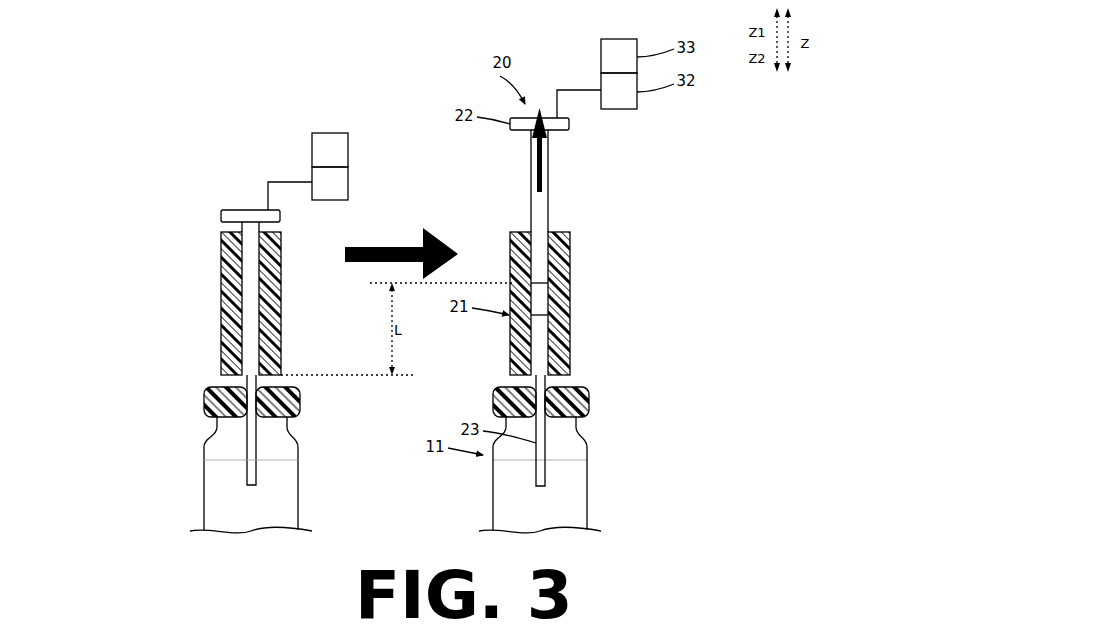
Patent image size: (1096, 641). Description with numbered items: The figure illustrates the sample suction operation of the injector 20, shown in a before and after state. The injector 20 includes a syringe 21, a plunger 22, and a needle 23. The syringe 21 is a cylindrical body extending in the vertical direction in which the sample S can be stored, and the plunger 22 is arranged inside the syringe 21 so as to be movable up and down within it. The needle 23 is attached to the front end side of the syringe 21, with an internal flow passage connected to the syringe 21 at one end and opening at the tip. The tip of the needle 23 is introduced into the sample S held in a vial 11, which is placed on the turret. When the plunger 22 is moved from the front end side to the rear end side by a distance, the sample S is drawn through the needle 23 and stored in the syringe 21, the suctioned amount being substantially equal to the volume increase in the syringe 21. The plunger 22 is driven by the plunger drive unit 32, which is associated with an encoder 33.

The injector 20 is at (237, 315).
The syringe 21 is at (220, 315).
The plunger 22 is at (221, 216).
The needle 23 is at (247, 443).
The vial 11 is at (195, 455).
The plunger drive unit 32 is at (348, 184).
The encoder 33 is at (348, 149).
The sample S is at (208, 495).